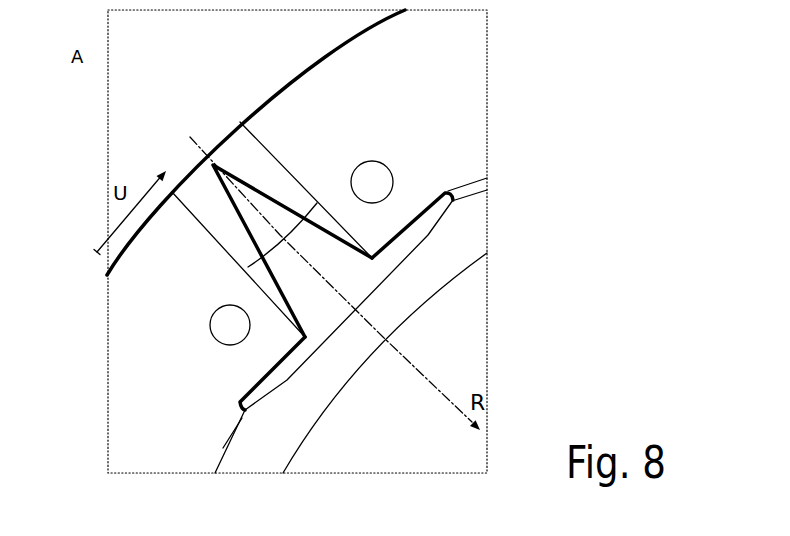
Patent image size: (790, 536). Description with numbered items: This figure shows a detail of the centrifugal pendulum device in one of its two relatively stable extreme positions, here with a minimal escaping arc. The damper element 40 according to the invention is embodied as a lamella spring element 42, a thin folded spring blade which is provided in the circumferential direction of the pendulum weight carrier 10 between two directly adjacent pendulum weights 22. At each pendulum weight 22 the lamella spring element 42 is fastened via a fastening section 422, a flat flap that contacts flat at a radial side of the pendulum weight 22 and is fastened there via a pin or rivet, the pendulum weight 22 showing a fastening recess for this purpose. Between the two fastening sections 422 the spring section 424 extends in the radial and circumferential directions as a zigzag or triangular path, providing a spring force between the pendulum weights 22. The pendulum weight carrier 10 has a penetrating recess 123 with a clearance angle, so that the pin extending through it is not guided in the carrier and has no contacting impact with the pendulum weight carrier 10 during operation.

The pendulum weight carrier 10 is at (412, 282).
The pendulum weight 22 is at (457, 97).
The damper element 40 is at (270, 210).
The lamella spring element 42 is at (243, 177).
The penetrating recess 123 is at (303, 295).
The fastening section 422 is at (428, 235).
The spring section 424 is at (348, 302).